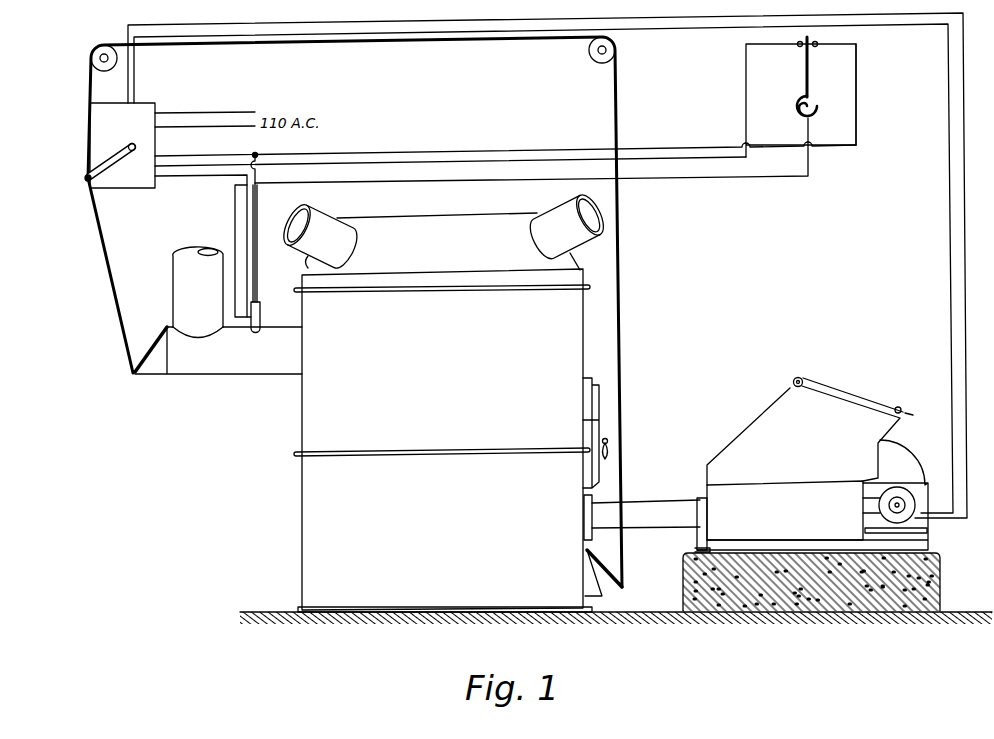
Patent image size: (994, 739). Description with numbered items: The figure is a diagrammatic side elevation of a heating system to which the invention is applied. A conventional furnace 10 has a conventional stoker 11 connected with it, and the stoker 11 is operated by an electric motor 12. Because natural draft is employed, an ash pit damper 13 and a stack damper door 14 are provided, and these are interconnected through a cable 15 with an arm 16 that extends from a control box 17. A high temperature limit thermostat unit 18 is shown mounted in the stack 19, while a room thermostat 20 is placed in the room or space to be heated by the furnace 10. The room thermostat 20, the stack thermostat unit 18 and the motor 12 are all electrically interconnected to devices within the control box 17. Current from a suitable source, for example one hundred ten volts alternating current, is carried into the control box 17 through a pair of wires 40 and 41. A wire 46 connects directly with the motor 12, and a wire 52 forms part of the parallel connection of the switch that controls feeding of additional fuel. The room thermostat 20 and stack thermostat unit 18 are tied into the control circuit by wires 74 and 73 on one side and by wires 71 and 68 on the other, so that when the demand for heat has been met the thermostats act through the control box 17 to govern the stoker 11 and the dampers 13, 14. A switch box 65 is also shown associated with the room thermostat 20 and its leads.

The furnace 10 is at (318, 548).
The stoker 11 is at (722, 495).
The electric motor 12 is at (923, 518).
The ash pit damper 13 is at (628, 578).
The stack damper door 14 is at (158, 335).
The cable 15 is at (492, 43).
The arm 16 is at (110, 152).
The control box 17 is at (115, 182).
The high temperature limit thermostat unit 18 is at (260, 303).
The stack 19 is at (228, 378).
The room thermostat 20 is at (808, 88).
The wire 40 is at (182, 113).
The wire 41 is at (225, 128).
The wire 46 is at (560, 265).
The wire 52 is at (950, 337).
The switch box 65 is at (746, 108).
The wire 68 is at (750, 177).
The wire 71 is at (247, 212).
The wire 73 is at (258, 207).
The wire 74 is at (856, 57).